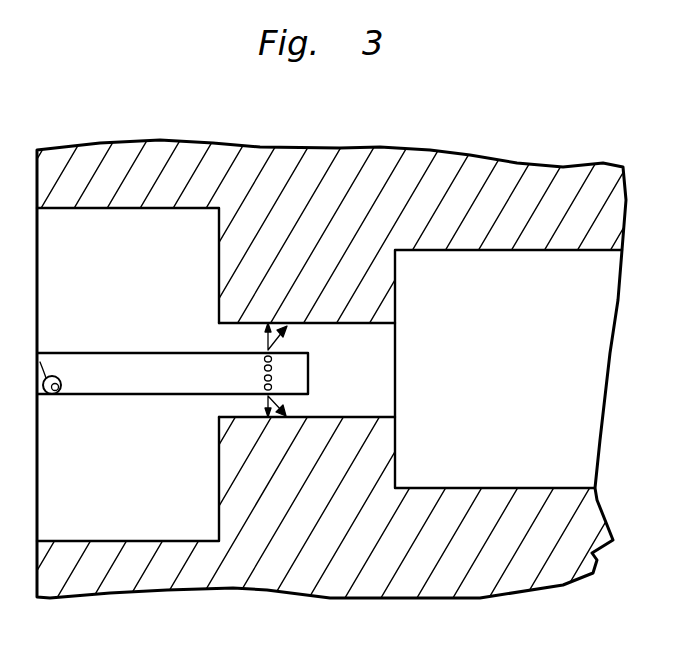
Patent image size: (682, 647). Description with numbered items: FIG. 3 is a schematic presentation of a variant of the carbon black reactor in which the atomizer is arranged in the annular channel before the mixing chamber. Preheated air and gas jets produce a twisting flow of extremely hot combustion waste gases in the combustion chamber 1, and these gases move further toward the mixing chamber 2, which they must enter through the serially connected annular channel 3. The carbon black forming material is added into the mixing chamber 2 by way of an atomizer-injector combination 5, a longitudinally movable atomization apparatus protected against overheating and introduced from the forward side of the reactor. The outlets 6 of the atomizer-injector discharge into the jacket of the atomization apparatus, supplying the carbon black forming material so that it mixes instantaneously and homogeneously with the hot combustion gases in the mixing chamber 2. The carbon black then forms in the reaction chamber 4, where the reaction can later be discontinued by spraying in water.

The combustion chamber 1 is at (142, 513).
The mixing chamber 2 is at (365, 377).
The annular channel 3 is at (240, 337).
The reaction chamber 4 is at (520, 400).
The atomizer-injector combination 5 is at (147, 333).
The outlets 6 is at (266, 398).